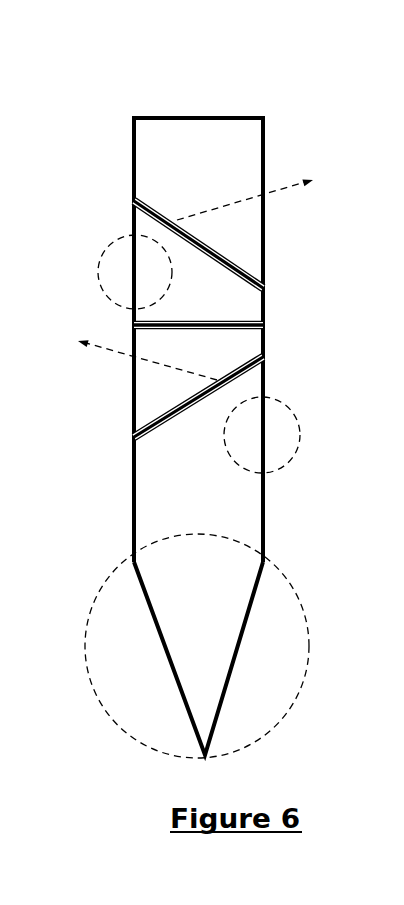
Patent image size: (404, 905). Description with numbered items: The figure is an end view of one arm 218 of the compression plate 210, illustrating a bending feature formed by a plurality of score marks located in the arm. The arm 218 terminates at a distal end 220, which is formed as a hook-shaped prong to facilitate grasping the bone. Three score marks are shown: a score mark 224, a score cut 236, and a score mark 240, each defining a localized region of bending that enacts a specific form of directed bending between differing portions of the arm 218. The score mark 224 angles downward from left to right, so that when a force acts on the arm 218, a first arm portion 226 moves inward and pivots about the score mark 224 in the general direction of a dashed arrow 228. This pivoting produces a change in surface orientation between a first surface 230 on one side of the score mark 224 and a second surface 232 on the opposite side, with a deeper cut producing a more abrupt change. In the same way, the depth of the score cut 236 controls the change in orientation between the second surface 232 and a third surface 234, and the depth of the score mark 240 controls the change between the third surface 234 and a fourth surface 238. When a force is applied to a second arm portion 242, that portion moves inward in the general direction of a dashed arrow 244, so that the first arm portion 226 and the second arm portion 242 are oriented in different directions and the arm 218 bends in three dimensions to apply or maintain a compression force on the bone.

The plate 210 is at (221, 90).
The arm 218 is at (264, 513).
The distal end 220 is at (106, 578).
The score mark 224 is at (153, 205).
The first arm portion 226 is at (97, 273).
The dashed arrow 228 is at (282, 181).
The first surface 230 is at (232, 184).
The second surface 232 is at (235, 309).
The third surface 234 is at (235, 361).
The score cut 236 is at (264, 311).
The fourth surface 238 is at (215, 486).
The score mark 240 is at (170, 407).
The second arm portion 242 is at (298, 457).
The dashed arrow 244 is at (85, 340).